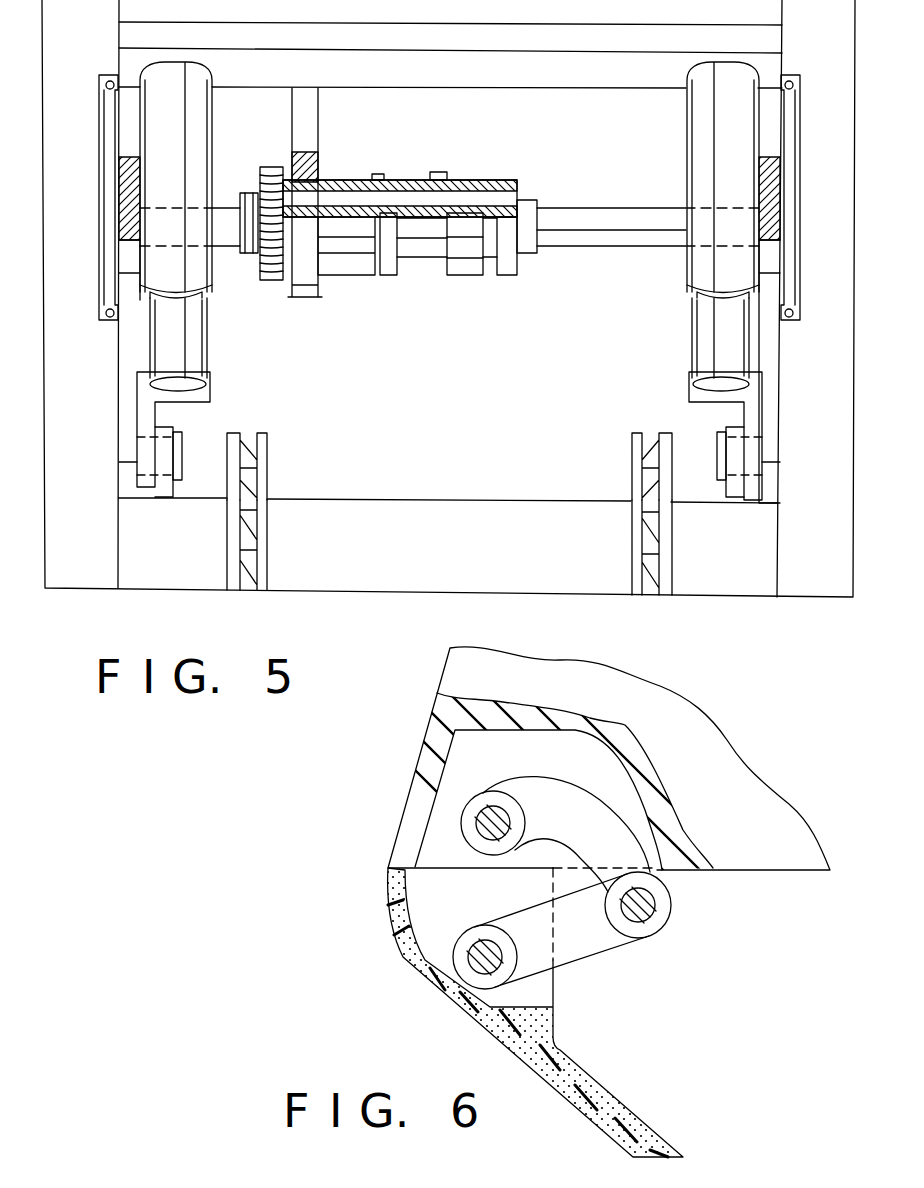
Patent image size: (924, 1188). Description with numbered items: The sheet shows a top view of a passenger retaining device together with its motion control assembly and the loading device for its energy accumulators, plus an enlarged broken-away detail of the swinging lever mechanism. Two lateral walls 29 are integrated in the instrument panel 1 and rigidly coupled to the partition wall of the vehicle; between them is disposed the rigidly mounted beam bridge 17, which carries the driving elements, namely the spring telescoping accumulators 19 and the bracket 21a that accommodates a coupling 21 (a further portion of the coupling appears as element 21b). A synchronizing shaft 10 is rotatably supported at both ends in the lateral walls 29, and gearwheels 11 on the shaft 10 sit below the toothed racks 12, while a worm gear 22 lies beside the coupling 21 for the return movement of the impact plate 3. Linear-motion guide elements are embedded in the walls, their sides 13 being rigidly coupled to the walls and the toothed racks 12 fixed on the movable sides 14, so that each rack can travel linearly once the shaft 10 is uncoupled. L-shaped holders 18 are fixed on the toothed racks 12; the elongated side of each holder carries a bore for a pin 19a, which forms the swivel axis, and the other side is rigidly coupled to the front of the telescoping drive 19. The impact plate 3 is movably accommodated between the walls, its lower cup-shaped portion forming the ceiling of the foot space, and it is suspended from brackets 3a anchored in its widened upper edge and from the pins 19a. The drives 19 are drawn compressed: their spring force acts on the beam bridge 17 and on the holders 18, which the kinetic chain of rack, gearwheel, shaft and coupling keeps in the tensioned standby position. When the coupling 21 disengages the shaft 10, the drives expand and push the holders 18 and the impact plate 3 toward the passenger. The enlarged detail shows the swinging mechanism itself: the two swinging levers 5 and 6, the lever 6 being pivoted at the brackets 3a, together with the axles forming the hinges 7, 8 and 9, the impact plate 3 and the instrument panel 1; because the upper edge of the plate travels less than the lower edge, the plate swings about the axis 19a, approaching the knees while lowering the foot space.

In FIG. 6, the instrument panel 1 is at (458, 672).
In FIG. 5, the impact plate 3 is at (527, 515).
In FIG. 6, the impact plate 3 is at (568, 1085).
In FIG. 5, the brackets 3a is at (165, 487).
In FIG. 5, the swinging lever 5 is at (242, 452).
In FIG. 6, the swinging lever 5 is at (530, 790).
In FIG. 5, the lever 6 is at (230, 572).
In FIG. 6, the lever 6 is at (566, 945).
In FIG. 6, the hinge axle 7 is at (475, 956).
In FIG. 6, the hinge axle 8 is at (656, 908).
In FIG. 6, the hinge axle 9 is at (490, 820).
In FIG. 5, the synchronizing shaft 10 is at (608, 228).
In FIG. 5, the gearwheels 11 is at (127, 260).
In FIG. 5, the toothed racks 12 is at (126, 200).
In FIG. 5, the sides of linear-motion guide elements 13 is at (100, 138).
In FIG. 5, the sides of linear-motion guide elements 14 is at (110, 320).
In FIG. 5, the beam bridge 17 is at (436, 40).
In FIG. 5, the L-shaped holders 18 is at (143, 417).
In FIG. 5, the spring telescoping accumulators 19 is at (198, 117).
In FIG. 5, the pins 19a is at (185, 452).
In FIG. 5, the coupling 21 is at (340, 230).
In FIG. 5, the bracket 21a is at (305, 118).
In FIG. 5, the coupling sleeve 21b is at (465, 262).
In FIG. 5, the worm gear 22 is at (282, 282).
In FIG. 5, the lateral walls 29 is at (72, 575).